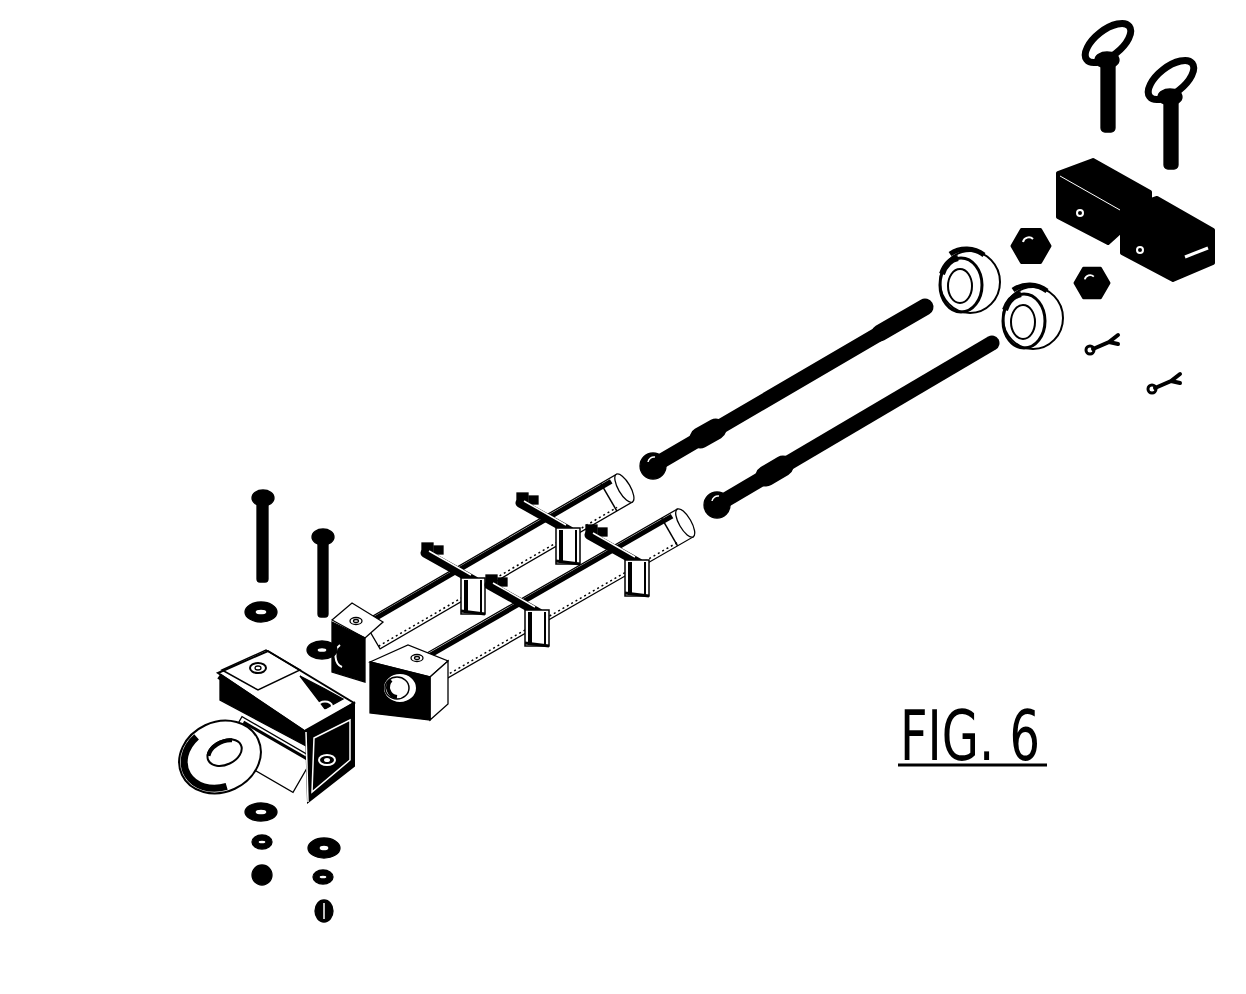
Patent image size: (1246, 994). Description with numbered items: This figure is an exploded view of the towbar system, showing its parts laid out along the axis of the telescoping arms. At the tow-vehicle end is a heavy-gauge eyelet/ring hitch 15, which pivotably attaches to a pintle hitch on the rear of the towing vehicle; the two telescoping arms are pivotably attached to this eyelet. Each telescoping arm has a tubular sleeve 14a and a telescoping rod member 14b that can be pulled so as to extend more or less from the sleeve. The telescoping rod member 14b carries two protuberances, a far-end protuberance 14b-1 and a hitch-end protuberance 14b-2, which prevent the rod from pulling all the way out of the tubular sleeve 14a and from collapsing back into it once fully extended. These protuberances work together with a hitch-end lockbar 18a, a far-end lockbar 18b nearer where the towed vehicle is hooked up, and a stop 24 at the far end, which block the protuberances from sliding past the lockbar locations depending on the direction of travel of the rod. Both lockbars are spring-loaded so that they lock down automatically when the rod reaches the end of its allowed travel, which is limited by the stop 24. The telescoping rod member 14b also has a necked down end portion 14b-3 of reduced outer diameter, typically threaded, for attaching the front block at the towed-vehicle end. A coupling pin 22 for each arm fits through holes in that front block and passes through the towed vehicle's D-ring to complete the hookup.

The eyelet/ring hitch 15 is at (182, 743).
The tubular sleeve 14a is at (488, 540).
The telescoping rod member 14b is at (839, 330).
The far-end protuberance 14b-1 is at (713, 413).
The hitch-end protuberance 14b-2 is at (657, 450).
The necked down end portion 14b-3 is at (913, 300).
The hitch-end lockbar 18a is at (508, 653).
The far-end lockbar 18b is at (545, 505).
The coupling pin 22 is at (1102, 97).
The stop 24 is at (1053, 327).